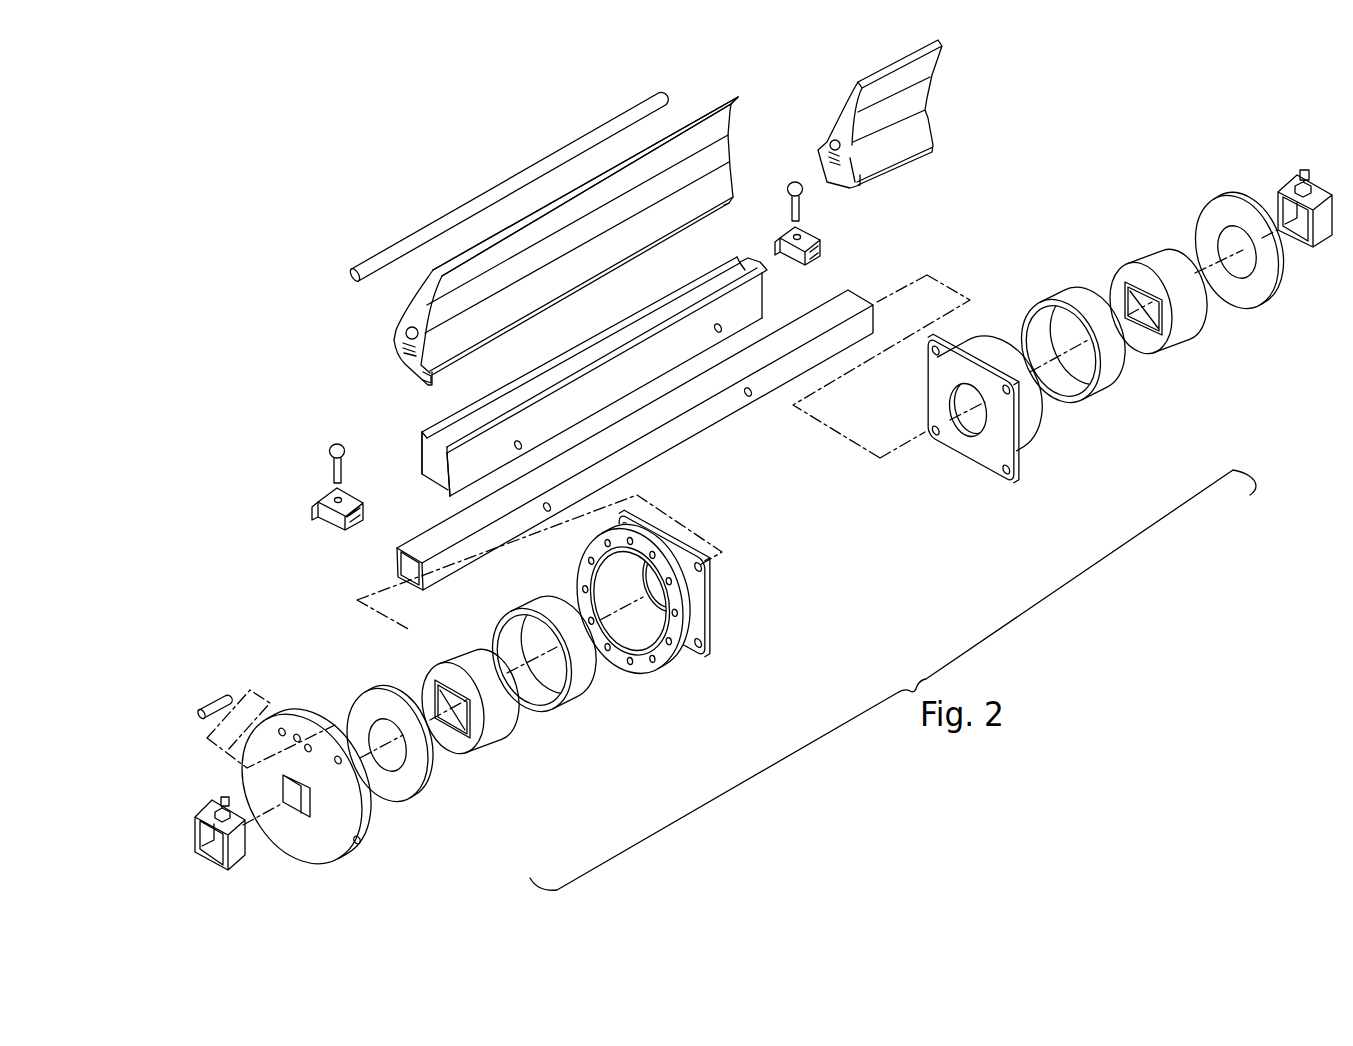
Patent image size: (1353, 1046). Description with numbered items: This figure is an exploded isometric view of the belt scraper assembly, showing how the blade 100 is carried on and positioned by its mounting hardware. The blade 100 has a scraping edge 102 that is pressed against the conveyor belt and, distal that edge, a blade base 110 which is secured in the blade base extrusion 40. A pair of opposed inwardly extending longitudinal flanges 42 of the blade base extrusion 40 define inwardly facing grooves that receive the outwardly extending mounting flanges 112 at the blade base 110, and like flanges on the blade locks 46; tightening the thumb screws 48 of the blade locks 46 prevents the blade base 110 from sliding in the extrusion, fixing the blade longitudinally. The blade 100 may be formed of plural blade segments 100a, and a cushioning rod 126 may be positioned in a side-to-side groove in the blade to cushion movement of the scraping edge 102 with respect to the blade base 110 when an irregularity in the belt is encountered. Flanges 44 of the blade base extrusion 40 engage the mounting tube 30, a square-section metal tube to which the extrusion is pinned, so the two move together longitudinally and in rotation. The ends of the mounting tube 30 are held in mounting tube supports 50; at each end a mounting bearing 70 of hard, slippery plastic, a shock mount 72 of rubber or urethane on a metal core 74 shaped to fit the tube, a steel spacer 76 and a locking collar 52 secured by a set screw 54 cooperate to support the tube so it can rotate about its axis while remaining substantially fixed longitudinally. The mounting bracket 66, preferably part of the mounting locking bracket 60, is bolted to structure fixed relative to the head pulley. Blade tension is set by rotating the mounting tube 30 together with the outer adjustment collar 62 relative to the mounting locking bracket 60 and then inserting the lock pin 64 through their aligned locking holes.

The mounting tube 30 is at (708, 427).
The blade base extrusion 40 is at (571, 349).
The longitudinal flanges 42 is at (750, 265).
The flanges 44 is at (418, 482).
The blade locks 46 is at (315, 508).
The thumb screws 48 is at (329, 452).
The mounting tube support 50 is at (748, 520).
The locking collar 52 is at (240, 860).
The set screw 54 is at (215, 805).
The mounting locking bracket 60 is at (658, 673).
The outer adjustment collar 62 is at (305, 850).
The lock pin 64 is at (205, 708).
The mounting bracket 66 is at (712, 632).
The mounting bearing 70 is at (578, 698).
The shock mount 72 is at (791, 510).
The metal core 74 is at (433, 693).
The spacer 76 is at (414, 798).
The blade 100 is at (561, 236).
The blade segment 100a is at (942, 118).
The scraping edge 102 is at (740, 104).
The blade base 110 is at (376, 342).
The mounting flanges 112 is at (406, 341).
The cushioning rod 126 is at (507, 178).